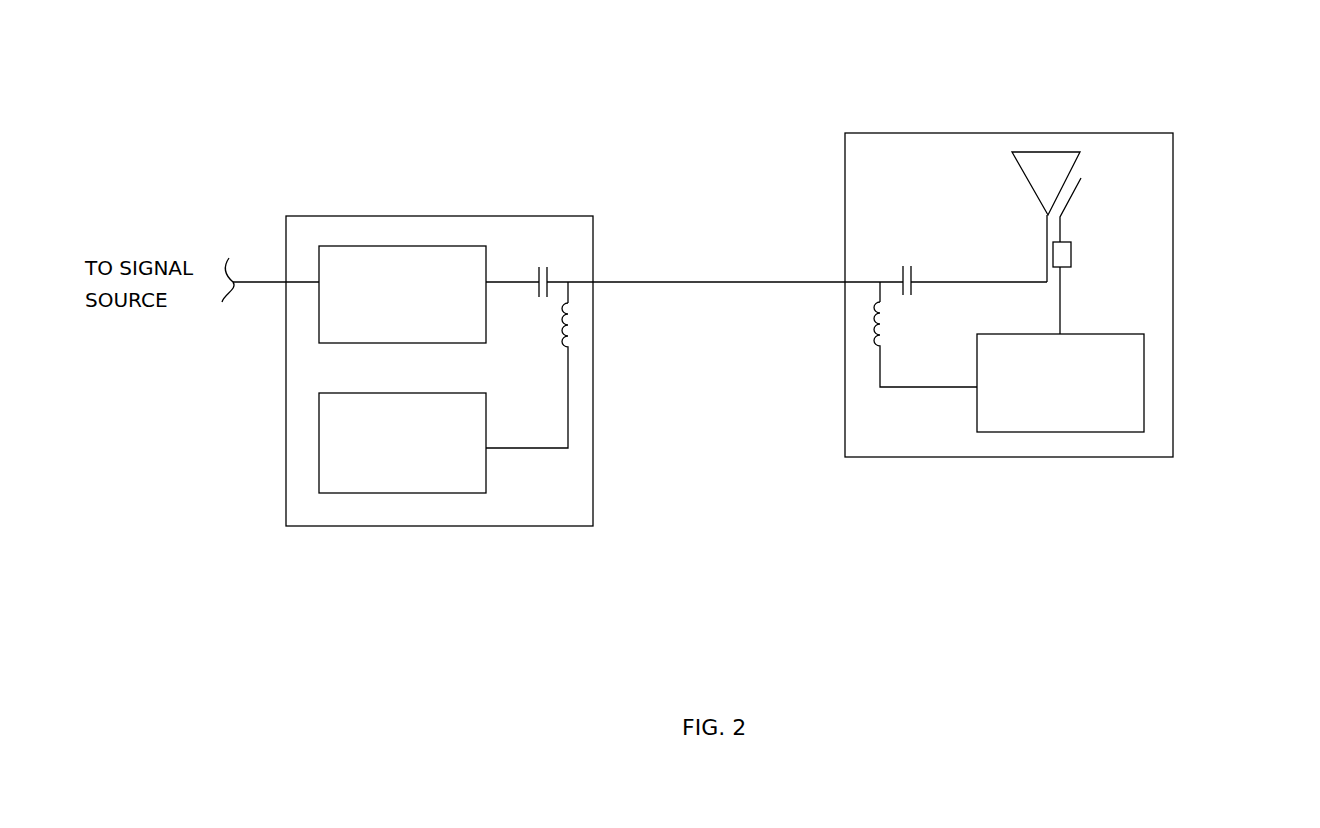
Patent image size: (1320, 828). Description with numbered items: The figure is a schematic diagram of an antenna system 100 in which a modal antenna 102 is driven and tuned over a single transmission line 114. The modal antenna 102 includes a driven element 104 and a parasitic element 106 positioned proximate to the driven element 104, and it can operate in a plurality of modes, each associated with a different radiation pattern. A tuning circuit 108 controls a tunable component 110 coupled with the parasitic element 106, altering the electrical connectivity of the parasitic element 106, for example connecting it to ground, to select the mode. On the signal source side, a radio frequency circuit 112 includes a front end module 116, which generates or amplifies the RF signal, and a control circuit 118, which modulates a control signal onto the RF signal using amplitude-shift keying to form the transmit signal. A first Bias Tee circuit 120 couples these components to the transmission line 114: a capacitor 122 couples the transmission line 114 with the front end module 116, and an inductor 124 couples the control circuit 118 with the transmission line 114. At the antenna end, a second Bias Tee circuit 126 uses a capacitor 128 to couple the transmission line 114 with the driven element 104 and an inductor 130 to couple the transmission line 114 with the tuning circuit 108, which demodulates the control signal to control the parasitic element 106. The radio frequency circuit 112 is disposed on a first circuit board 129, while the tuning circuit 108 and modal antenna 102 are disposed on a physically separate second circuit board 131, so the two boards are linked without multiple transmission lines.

The antenna system 100 is at (197, 50).
The modal antenna 102 is at (1165, 188).
The driven element 104 is at (1078, 162).
The parasitic element 106 is at (1073, 197).
The tuning circuit 108 is at (1078, 394).
The tunable component 110 is at (1072, 267).
The radio frequency circuit 112 is at (439, 314).
The transmission line 114 is at (693, 282).
The front end module 116 is at (420, 311).
The control circuit 118 is at (420, 461).
The first Bias Tee circuit 120 is at (582, 292).
The capacitor 122 is at (550, 273).
The inductor 124 is at (578, 322).
The second Bias Tee circuit 126 is at (859, 293).
The capacitor 128 is at (897, 268).
The first circuit board 129 is at (335, 216).
The inductor 130 is at (868, 337).
The second circuit board 131 is at (948, 133).